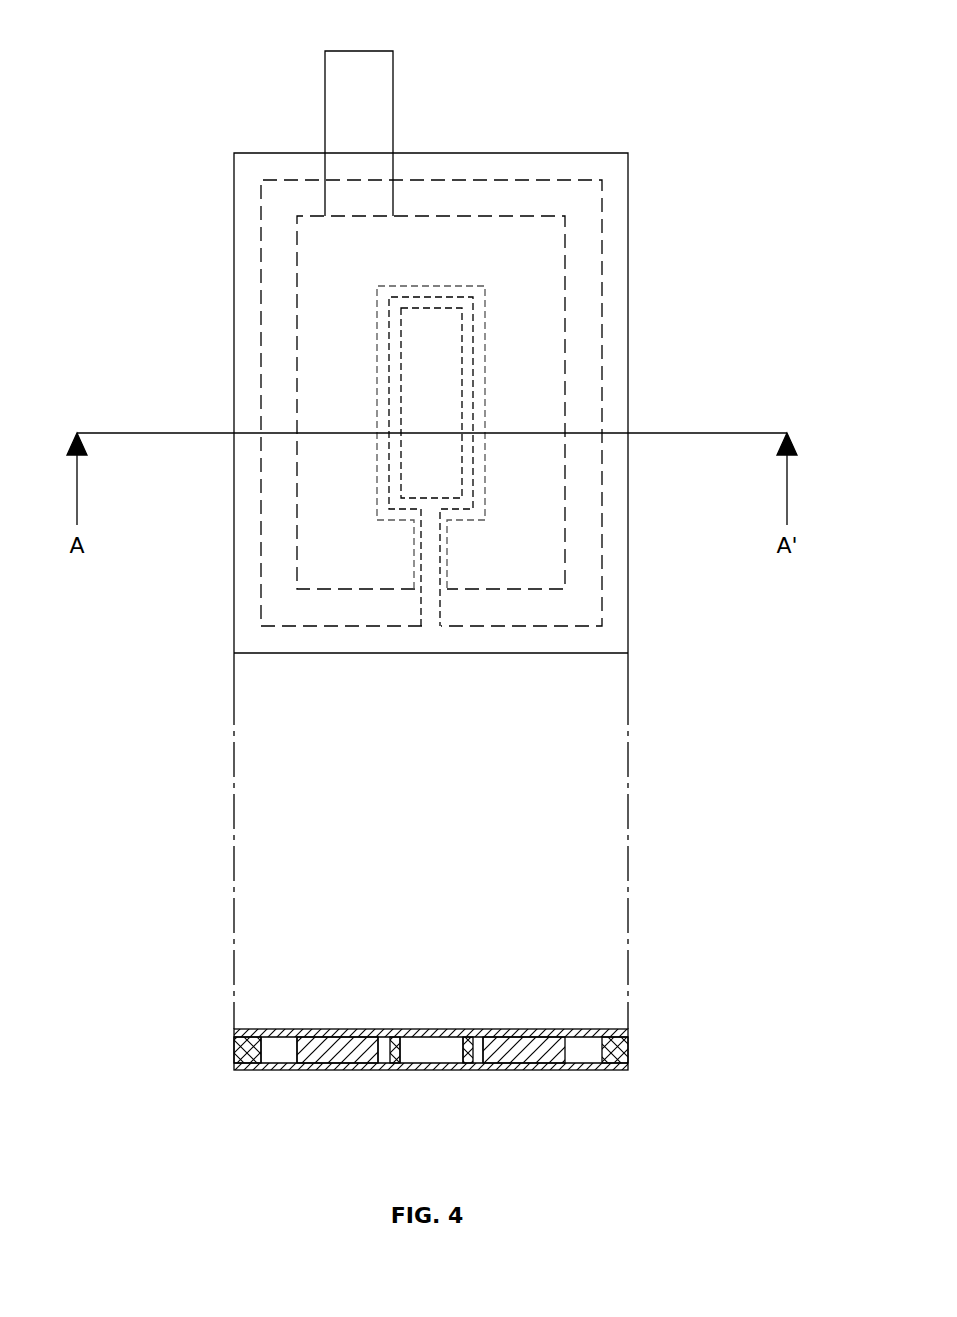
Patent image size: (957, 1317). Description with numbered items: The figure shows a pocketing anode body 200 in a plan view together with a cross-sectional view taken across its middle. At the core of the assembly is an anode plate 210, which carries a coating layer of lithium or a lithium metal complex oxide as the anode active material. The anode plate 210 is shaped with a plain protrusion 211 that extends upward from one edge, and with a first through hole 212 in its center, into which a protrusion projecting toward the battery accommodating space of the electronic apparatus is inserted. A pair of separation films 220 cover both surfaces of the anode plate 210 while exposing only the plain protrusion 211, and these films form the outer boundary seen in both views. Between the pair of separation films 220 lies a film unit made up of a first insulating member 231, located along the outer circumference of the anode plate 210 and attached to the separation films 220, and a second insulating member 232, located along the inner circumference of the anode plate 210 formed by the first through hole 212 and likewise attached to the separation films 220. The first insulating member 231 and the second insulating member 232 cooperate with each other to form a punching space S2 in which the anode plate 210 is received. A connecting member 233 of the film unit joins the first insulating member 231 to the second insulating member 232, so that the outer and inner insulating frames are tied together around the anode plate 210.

The pocketing anode body 200 is at (640, 41).
The plain protrusion 211 is at (383, 91).
The first through hole 212 is at (421, 345).
The anode plate 210 is at (535, 512).
The separation films 220 is at (628, 235).
The first insulating member 231 is at (622, 397).
The second insulating member 232 is at (395, 397).
The connecting member 233 is at (428, 612).
The punching space S2 is at (558, 200).